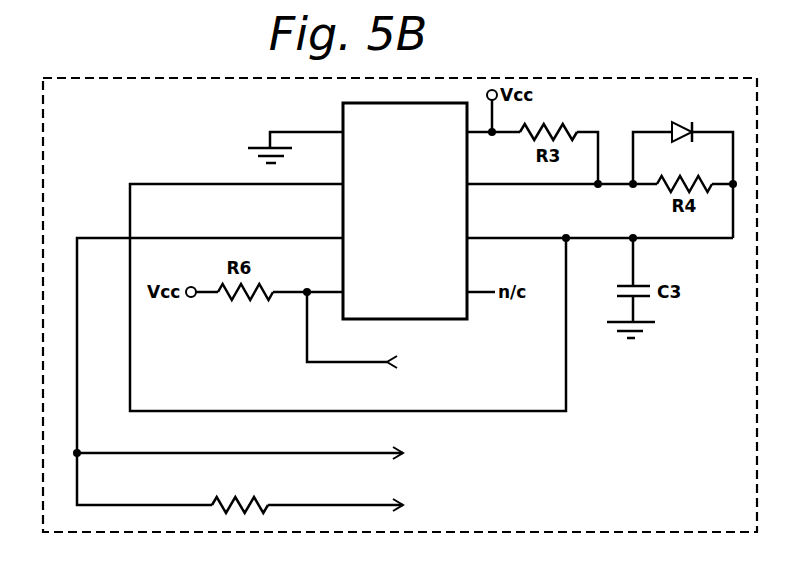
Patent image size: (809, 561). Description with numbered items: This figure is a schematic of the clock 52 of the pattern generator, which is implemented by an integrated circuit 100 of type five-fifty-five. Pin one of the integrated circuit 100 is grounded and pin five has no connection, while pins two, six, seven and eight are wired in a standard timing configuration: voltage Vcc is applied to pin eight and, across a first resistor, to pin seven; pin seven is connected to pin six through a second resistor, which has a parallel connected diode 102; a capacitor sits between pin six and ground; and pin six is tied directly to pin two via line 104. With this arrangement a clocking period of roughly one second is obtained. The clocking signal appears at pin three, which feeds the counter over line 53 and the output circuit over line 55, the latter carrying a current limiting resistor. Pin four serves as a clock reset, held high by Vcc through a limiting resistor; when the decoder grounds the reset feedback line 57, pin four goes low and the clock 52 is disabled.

The clock 52 is at (135, 78).
The integrated circuit 100 is at (343, 118).
The diode 102 is at (672, 122).
The line 104 is at (566, 396).
The reset feedback line 57 is at (390, 362).
The line 53 is at (403, 453).
The line 55 is at (403, 505).